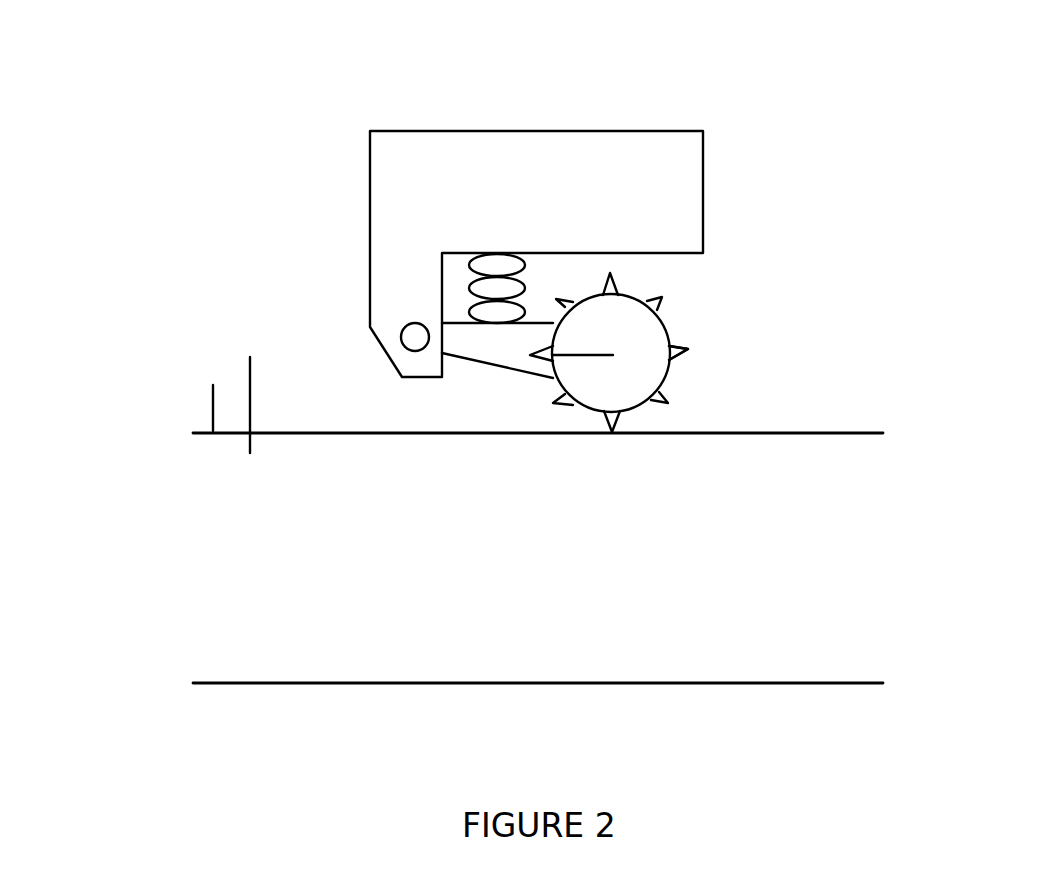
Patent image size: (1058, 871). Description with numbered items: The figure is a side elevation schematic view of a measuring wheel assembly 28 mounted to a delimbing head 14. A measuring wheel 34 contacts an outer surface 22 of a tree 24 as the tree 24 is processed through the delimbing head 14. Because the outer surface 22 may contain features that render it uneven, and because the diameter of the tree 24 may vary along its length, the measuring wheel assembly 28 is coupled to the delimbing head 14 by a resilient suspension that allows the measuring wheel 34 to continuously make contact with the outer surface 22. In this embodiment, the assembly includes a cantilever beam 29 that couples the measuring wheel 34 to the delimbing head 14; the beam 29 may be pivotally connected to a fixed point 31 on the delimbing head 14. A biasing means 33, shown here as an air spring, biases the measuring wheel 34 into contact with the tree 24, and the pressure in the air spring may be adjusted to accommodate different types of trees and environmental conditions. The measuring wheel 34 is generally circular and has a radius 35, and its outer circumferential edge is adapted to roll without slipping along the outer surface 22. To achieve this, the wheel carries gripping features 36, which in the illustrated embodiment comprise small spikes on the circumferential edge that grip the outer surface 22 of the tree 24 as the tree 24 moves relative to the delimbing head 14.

The delimbing head 14 is at (490, 131).
The outer surface 22 is at (213, 385).
The tree 24 is at (250, 357).
The measuring wheel assembly 28 is at (828, 245).
The cantilever beam 29 is at (500, 367).
The fixed point 31 is at (410, 323).
The biasing means 33 is at (525, 261).
The measuring wheel 34 is at (637, 406).
The radius 35 is at (592, 358).
The gripping features 36 is at (687, 347).